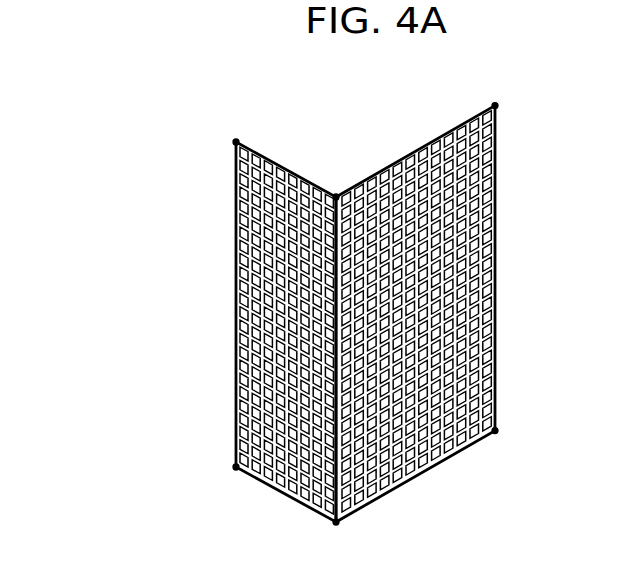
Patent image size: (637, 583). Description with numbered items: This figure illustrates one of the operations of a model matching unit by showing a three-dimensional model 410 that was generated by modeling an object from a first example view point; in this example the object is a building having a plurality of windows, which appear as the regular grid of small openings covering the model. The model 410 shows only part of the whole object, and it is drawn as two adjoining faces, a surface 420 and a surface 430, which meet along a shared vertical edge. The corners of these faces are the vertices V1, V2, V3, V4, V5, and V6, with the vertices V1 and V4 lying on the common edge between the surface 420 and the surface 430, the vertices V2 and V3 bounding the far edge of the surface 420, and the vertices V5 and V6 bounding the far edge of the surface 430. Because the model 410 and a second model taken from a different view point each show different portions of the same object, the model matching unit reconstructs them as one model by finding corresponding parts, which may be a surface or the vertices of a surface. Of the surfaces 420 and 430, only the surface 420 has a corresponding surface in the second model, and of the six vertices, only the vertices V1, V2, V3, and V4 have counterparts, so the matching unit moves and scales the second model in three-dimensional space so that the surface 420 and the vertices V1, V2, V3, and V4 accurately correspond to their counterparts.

The 3D model 410 is at (267, 316).
The surface 420 is at (432, 455).
The surface 430 is at (290, 477).
The vertex V1 is at (335, 182).
The vertex V2 is at (493, 92).
The vertex V3 is at (512, 433).
The vertex V4 is at (335, 538).
The vertex V5 is at (237, 126).
The vertex V6 is at (230, 482).